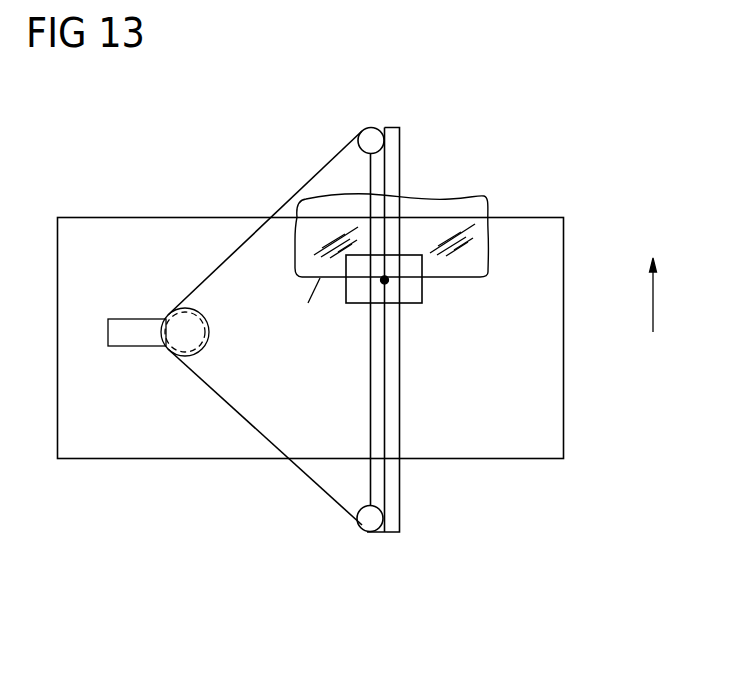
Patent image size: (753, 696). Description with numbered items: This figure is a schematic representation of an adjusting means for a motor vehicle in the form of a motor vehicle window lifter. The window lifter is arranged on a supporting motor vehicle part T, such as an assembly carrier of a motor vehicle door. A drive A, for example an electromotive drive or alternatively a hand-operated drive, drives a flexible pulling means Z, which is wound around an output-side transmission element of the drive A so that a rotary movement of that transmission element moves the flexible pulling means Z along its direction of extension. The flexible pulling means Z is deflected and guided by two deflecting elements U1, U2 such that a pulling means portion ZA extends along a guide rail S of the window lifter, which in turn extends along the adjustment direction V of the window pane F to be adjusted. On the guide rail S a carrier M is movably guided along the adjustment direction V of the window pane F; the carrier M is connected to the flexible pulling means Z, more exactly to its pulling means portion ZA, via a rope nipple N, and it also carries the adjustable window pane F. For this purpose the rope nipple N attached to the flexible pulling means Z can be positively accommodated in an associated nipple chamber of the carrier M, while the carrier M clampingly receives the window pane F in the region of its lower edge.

The supporting motor vehicle part T is at (542, 368).
The drive A is at (135, 332).
The flexible pulling means Z is at (260, 230).
The pulling means portion ZA is at (380, 418).
The guide rail S is at (392, 515).
The deflecting element U1 is at (370, 135).
The deflecting element U2 is at (368, 522).
The window pane F is at (455, 208).
The carrier M is at (410, 293).
The rope nipple N is at (388, 280).
The adjustment direction V is at (668, 295).